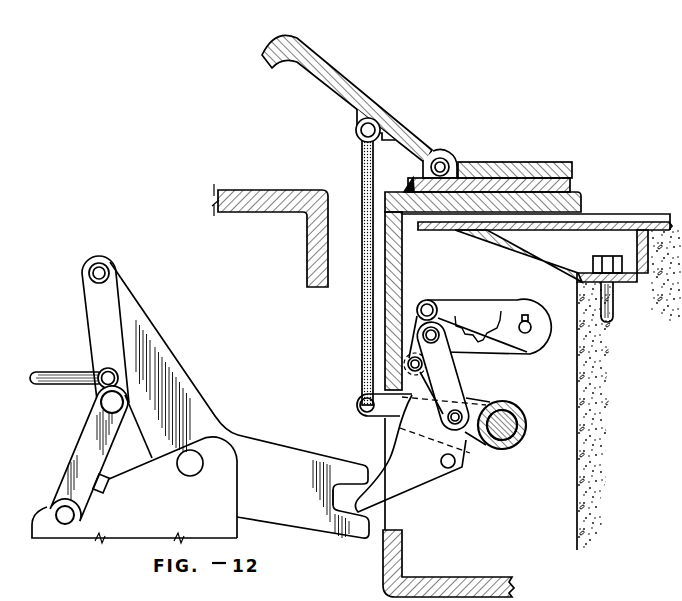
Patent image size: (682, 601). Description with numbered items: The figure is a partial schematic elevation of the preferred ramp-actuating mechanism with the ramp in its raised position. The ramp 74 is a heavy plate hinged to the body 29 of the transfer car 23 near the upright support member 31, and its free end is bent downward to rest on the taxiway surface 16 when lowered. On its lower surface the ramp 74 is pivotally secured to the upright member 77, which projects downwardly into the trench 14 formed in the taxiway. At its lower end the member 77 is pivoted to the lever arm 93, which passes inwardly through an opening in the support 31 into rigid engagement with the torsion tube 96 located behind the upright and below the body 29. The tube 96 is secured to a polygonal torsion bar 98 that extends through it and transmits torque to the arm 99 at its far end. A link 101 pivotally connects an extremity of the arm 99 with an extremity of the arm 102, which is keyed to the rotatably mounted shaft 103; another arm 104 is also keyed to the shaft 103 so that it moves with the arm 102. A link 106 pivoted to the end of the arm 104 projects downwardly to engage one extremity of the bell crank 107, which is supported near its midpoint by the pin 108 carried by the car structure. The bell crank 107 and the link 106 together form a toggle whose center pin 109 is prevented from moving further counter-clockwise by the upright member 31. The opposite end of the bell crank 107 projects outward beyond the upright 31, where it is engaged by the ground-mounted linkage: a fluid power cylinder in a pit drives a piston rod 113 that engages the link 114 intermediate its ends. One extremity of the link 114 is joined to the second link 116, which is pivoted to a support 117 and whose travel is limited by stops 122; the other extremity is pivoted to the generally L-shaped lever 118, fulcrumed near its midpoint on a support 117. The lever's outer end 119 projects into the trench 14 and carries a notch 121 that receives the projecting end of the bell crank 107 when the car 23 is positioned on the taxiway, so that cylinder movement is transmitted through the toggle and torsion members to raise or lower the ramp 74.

The ramp 74 is at (316, 45).
The upright member 77 is at (365, 172).
The taxiway surface 16 is at (243, 189).
The transfer car 23 is at (539, 152).
The body 29 is at (580, 199).
The upright support member 31 is at (392, 290).
The trench 14 is at (566, 310).
The link 106 is at (416, 310).
The arm 104 is at (487, 310).
The arm 102 is at (457, 322).
The shaft 103 is at (525, 333).
The center pin 109 is at (408, 364).
The link 101 is at (445, 373).
The arm 99 is at (477, 406).
The torsion tube 96 is at (524, 415).
The torsion bar 98 is at (510, 443).
The lever arm 93 is at (384, 413).
The bell crank 107 is at (410, 481).
The pin 108 is at (455, 466).
The link 114 is at (112, 310).
The piston rod 113 is at (50, 375).
The second link 116 is at (80, 455).
The stop 122 is at (104, 493).
The support 117 is at (217, 520).
The L-shaped lever 118 is at (172, 372).
The outer end 119 is at (294, 470).
The notch 121 is at (348, 507).